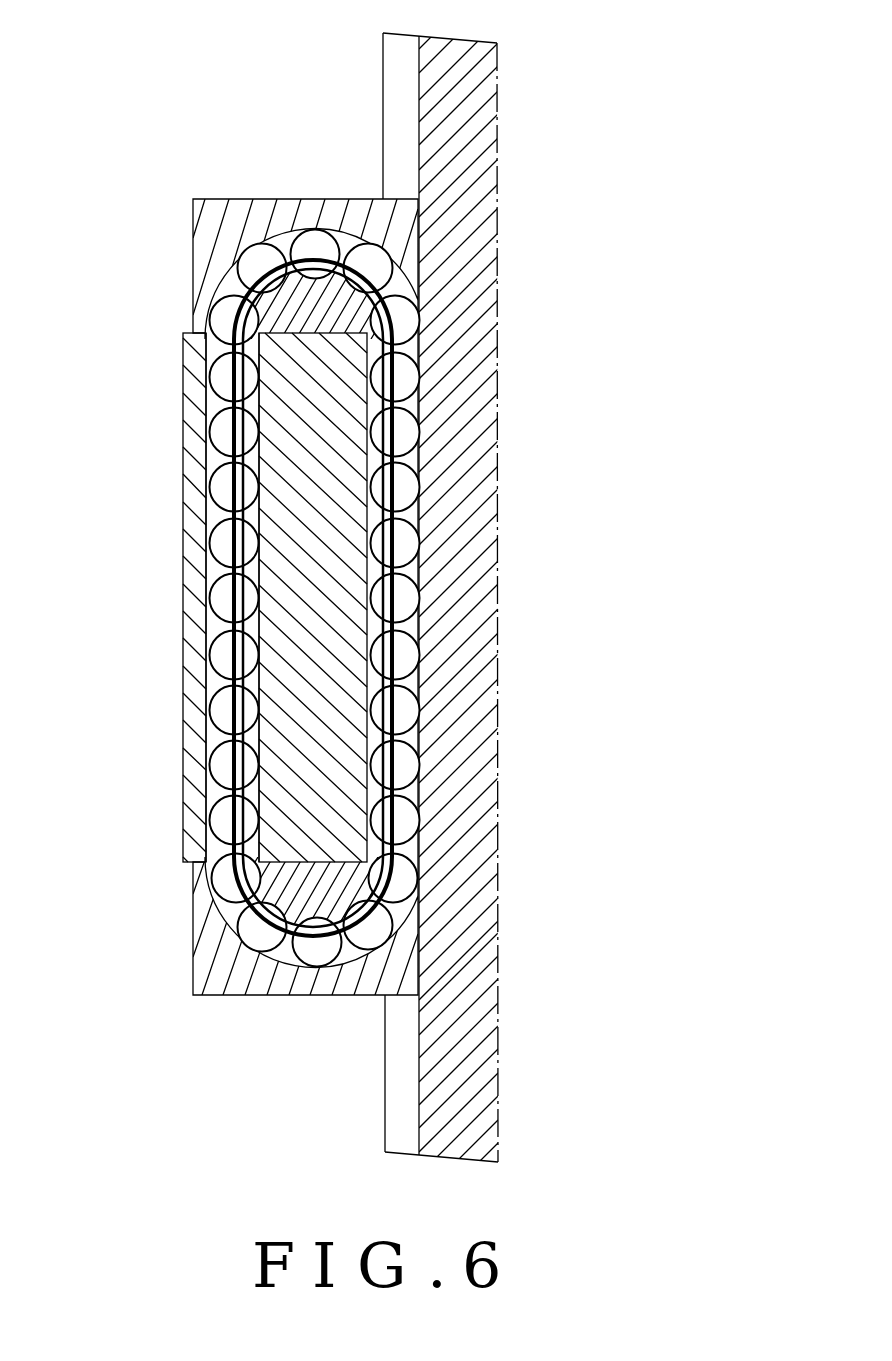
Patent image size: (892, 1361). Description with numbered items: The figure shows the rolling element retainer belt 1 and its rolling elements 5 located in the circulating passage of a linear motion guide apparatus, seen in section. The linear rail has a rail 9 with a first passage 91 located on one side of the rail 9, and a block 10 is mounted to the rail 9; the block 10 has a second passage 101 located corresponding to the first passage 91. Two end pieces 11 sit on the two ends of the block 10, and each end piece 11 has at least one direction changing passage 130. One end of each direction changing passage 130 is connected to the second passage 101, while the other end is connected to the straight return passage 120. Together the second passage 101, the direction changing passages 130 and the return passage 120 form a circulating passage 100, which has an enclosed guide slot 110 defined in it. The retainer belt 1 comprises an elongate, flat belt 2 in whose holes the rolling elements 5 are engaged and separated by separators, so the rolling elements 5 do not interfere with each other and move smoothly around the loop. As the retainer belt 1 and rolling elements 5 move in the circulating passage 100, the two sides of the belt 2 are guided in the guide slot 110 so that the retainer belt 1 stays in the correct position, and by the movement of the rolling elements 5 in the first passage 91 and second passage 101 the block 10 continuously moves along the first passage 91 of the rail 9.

The rolling element retainer belt 1 is at (341, 598).
The belt 2 is at (370, 598).
The rolling element 5 is at (407, 766).
The rail 9 is at (458, 178).
The first passage 91 is at (394, 104).
The block 10 is at (137, 613).
The end piece 11 is at (235, 986).
The circulating passage 100 is at (207, 683).
The second passage 101 is at (370, 598).
The guide slot 110 is at (236, 377).
The return passage 120 is at (255, 515).
The direction changing passage 130 is at (280, 243).